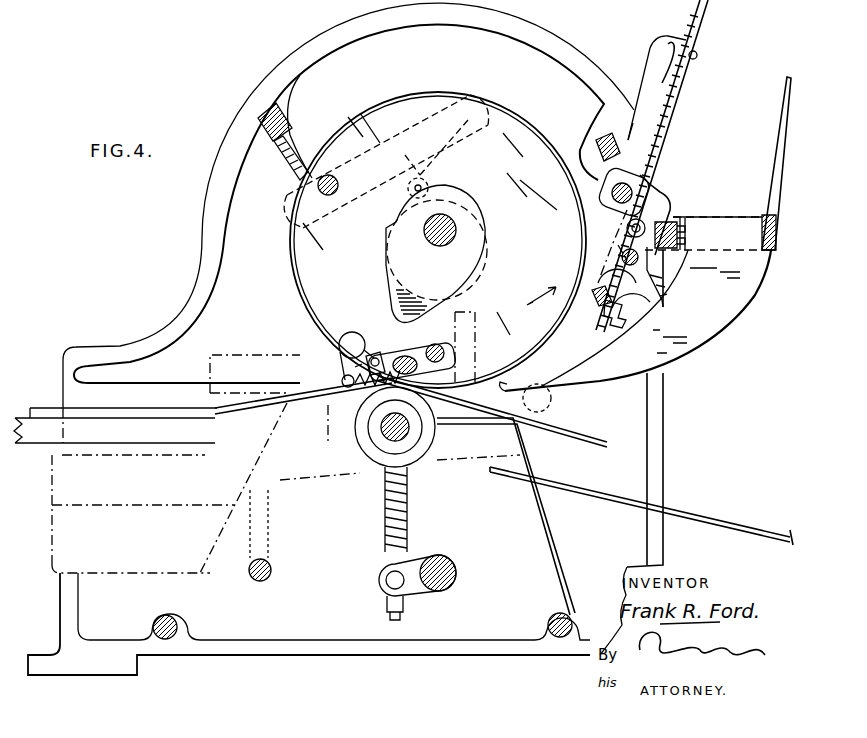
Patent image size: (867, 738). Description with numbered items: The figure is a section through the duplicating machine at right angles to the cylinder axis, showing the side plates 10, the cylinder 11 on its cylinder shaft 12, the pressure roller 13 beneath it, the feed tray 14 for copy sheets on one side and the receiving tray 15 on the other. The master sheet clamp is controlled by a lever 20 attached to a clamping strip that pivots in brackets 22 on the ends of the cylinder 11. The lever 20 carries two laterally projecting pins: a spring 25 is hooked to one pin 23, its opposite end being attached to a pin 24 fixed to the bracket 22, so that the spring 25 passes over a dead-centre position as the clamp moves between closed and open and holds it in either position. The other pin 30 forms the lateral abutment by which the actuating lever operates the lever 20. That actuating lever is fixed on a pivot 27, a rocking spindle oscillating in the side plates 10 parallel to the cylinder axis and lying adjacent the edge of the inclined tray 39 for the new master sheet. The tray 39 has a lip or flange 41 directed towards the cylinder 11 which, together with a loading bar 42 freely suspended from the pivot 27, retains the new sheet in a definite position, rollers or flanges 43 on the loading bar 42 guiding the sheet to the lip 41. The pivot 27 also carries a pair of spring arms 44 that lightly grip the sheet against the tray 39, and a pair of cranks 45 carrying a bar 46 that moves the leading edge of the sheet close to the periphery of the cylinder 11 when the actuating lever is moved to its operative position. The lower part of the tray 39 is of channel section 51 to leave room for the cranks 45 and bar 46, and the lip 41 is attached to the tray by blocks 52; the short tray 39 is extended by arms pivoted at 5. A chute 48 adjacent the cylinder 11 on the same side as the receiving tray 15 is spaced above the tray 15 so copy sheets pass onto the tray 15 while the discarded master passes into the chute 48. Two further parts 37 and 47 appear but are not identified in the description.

The pivot 5 is at (697, 56).
The side plates 10 is at (527, 42).
The cylinder 11 is at (420, 110).
The cylinder shaft 12 is at (452, 228).
The pressure roller 13 is at (413, 433).
The feed tray 14 is at (230, 395).
The receiving tray 15 is at (548, 480).
The lever 20 is at (380, 352).
The brackets 22 is at (418, 353).
The pin 23 is at (344, 381).
The pin 24 is at (435, 345).
The spring 25 is at (355, 368).
The pivot 27 is at (610, 191).
The pin 30 is at (352, 340).
The cam notch 37 is at (397, 292).
The tray 39 is at (682, 87).
The lip or flange 41 is at (592, 297).
The loading bar 42 is at (627, 228).
The rollers or flanges 43 is at (622, 238).
The spring arms 44 is at (660, 82).
The cranks 45 is at (640, 262).
The bar 46 is at (660, 273).
The clamp 47 is at (674, 222).
The chute 48 is at (585, 375).
The channel section 51 is at (670, 202).
The blocks 52 is at (630, 292).